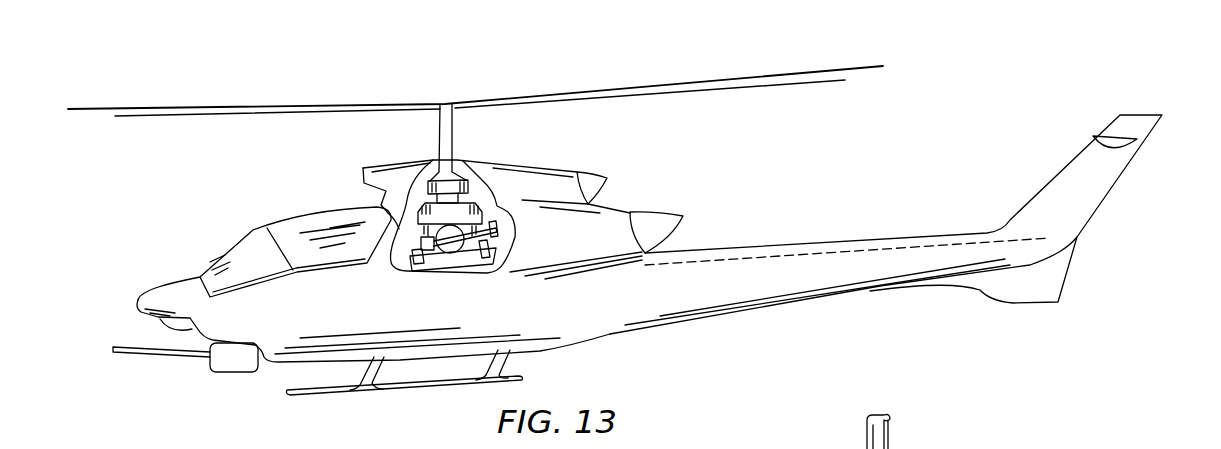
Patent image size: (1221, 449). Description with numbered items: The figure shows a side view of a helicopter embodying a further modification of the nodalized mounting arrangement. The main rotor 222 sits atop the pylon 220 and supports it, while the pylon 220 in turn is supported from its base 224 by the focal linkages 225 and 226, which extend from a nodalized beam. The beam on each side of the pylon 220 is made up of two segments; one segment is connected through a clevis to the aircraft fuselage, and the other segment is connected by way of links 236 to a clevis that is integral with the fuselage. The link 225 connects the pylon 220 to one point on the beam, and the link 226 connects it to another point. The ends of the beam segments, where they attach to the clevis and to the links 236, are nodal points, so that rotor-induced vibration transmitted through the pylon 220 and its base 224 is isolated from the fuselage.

The rotor 222 is at (532, 97).
The pylon 220 is at (460, 172).
The links 236 is at (498, 230).
The focal linkage (link) 225 is at (488, 249).
The focal linkage (link) 226 is at (420, 256).
The base 224 is at (477, 260).